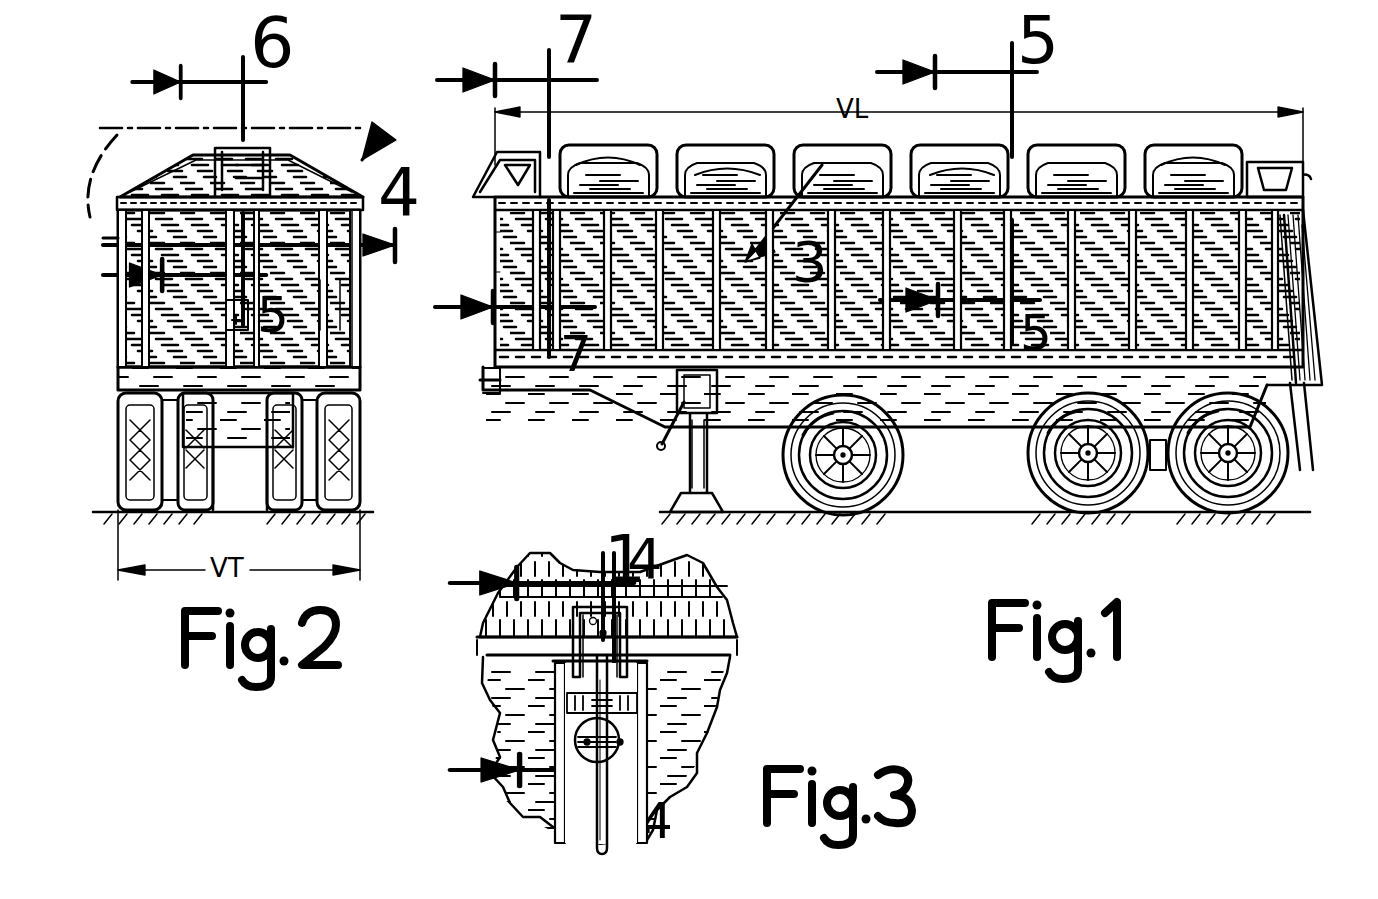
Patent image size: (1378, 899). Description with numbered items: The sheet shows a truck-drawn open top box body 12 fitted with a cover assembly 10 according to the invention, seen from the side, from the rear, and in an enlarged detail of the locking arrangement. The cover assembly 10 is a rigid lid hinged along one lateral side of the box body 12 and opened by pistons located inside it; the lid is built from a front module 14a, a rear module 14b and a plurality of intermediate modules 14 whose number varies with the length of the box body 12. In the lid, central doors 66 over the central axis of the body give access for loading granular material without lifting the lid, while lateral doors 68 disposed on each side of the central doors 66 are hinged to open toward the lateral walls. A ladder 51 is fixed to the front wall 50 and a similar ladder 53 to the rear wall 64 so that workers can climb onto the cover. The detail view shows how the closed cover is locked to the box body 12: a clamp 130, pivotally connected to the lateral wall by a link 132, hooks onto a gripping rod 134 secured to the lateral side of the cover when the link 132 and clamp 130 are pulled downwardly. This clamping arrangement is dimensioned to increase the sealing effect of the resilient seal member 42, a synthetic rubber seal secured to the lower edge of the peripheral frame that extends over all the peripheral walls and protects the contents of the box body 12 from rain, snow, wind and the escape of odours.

In FIG. 1, the cover assembly 10 is at (1030, 138).
In FIG. 2, the cover assembly 10 is at (320, 167).
In FIG. 3, the cover assembly 10 is at (735, 602).
In FIG. 1, the box body 12 is at (1320, 212).
In FIG. 2, the box body 12 is at (362, 328).
In FIG. 1, the intermediate modules 14 is at (698, 150).
In FIG. 1, the front module 14a is at (530, 147).
In FIG. 1, the rear module 14b is at (1268, 160).
In FIG. 3, the resilient seal member 42 is at (490, 652).
In FIG. 1, the front wall 50 is at (495, 262).
In FIG. 1, the ladder 51 is at (495, 233).
In FIG. 2, the ladder 53 is at (228, 325).
In FIG. 2, the rear wall 64 is at (350, 295).
In FIG. 1, the central doors 66 is at (600, 150).
In FIG. 2, the central doors 66 is at (256, 150).
In FIG. 1, the lateral doors 68 is at (730, 165).
In FIG. 2, the lateral doors 68 is at (172, 162).
In FIG. 3, the clamp 130 is at (645, 730).
In FIG. 3, the link 132 is at (623, 762).
In FIG. 3, the gripping rod 134 is at (665, 665).